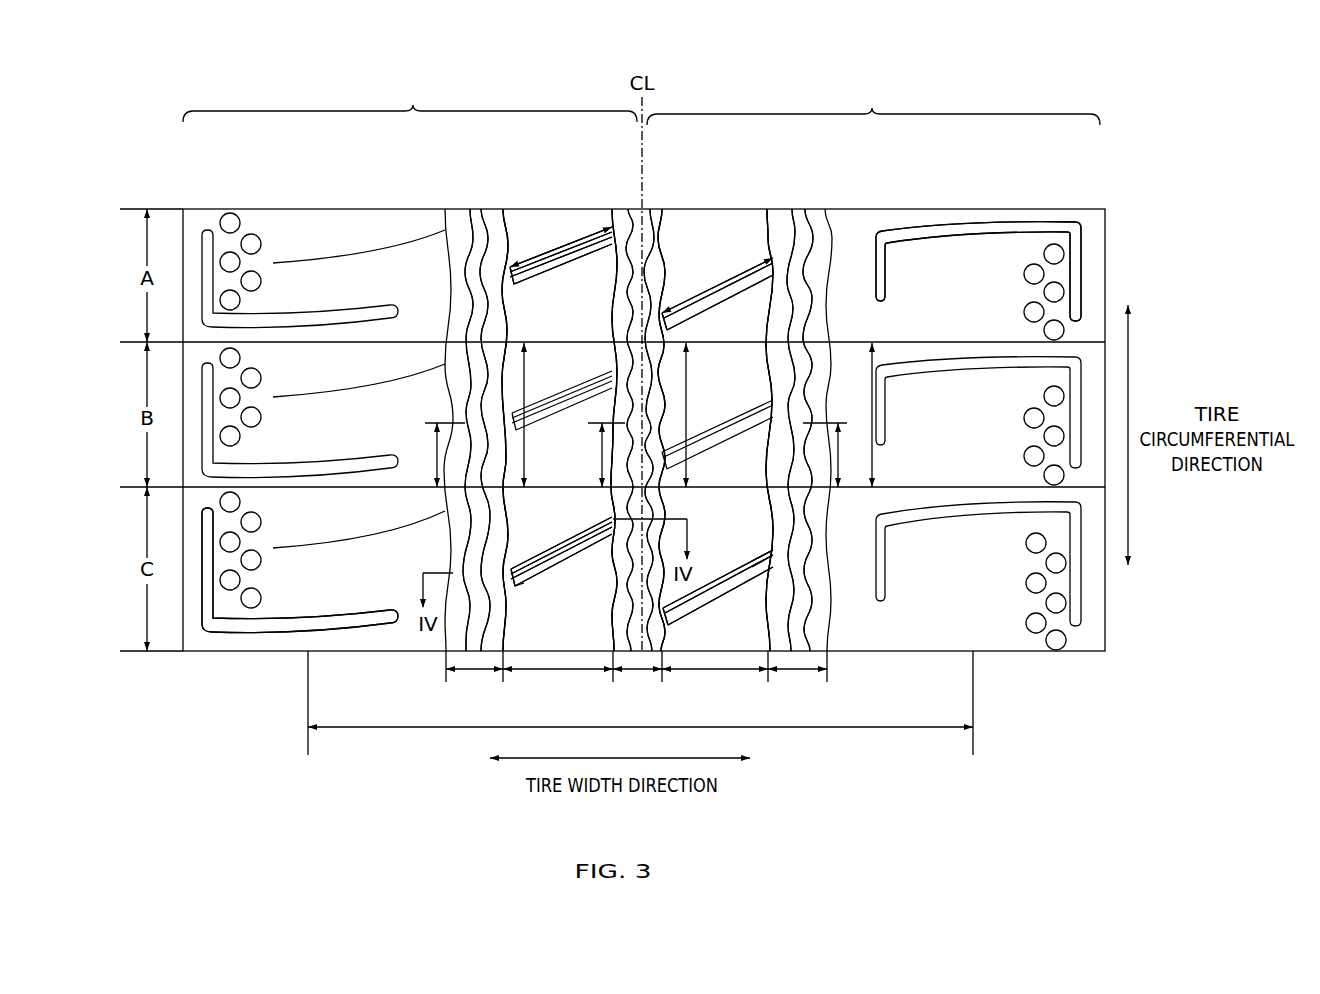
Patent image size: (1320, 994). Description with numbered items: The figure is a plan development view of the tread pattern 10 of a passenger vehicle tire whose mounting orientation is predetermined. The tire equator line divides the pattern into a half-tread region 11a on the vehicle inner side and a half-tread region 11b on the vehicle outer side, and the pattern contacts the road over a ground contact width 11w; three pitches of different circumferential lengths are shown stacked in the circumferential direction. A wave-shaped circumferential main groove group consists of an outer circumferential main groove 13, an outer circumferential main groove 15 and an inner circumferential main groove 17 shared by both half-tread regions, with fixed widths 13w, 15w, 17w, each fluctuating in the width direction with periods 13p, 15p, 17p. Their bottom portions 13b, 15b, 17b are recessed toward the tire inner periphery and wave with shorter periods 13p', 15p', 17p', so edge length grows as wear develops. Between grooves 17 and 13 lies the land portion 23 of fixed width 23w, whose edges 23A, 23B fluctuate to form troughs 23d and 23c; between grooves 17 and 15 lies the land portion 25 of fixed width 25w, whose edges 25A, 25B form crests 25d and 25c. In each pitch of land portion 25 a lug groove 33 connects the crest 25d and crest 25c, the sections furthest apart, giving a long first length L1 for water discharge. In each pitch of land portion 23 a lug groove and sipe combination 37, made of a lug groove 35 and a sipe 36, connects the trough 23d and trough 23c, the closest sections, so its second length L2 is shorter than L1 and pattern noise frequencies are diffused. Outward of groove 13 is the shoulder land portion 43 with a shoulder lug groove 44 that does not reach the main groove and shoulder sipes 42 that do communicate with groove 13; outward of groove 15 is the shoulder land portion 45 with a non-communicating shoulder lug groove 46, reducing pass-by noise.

The tread pattern 10 is at (1150, 115).
The half-tread region 11a is at (410, 102).
The half-tread region 11b is at (873, 105).
The outer circumferential main groove 13 is at (449, 207).
The bottom portion 13b is at (473, 208).
The outer circumferential main groove 15 is at (786, 206).
The bottom portion 15b is at (806, 208).
The inner circumferential main groove 17 is at (627, 203).
The bottom portion 17b is at (636, 206).
The land portion 23 is at (544, 208).
The edge 23A is at (497, 208).
The edge 23B is at (609, 208).
The trough 23c is at (520, 284).
The trough 23d is at (612, 252).
The land portion 25 is at (713, 212).
The edge 25A is at (662, 208).
The edge 25B is at (770, 208).
The crest 25c is at (670, 634).
The crest 25d is at (768, 549).
The lug groove 33 is at (739, 592).
The lug groove 35 is at (515, 584).
The sipe 36 is at (587, 536).
The lug groove and sipe combination 37 is at (566, 565).
The shoulder sipe 42 is at (368, 537).
The shoulder land portion 43 is at (318, 208).
The shoulder lug groove 44 is at (328, 612).
The shoulder land portion 45 is at (950, 212).
The shoulder lug groove 46 is at (1003, 213).
The first length L1 is at (700, 295).
The second length L2 is at (556, 258).
The period 13p is at (548, 415).
The period 13p' is at (426, 452).
The period 17p is at (710, 415).
The period 17p' is at (587, 453).
The period 15p is at (896, 415).
The period 15p' is at (837, 433).
The ground contact width 11w is at (352, 726).
The width 13w is at (477, 672).
The width 23w is at (557, 672).
The width 17w is at (636, 672).
The width 25w is at (712, 672).
The width 15w is at (792, 672).